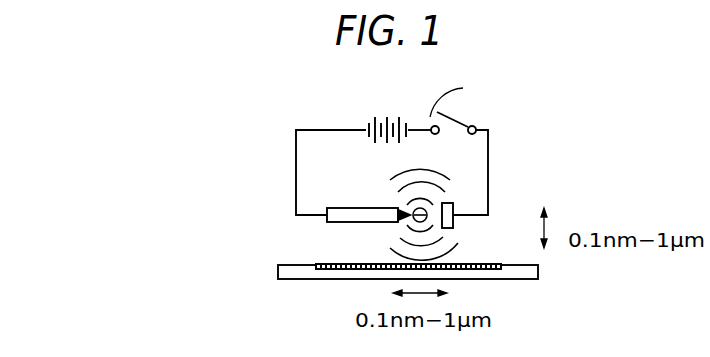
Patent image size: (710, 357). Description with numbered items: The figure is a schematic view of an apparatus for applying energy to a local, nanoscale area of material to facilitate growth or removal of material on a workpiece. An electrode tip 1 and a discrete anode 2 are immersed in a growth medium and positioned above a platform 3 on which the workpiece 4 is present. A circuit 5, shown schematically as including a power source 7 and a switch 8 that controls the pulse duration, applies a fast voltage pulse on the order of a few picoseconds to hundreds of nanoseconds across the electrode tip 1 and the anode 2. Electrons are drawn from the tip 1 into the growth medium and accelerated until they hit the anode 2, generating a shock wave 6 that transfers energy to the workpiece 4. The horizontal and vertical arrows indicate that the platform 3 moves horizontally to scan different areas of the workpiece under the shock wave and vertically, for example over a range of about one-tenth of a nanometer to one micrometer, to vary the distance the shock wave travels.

The electrode tip 1 is at (408, 212).
The discrete anode 2 is at (458, 204).
The platform 3 is at (539, 271).
The workpiece 4 is at (332, 262).
The circuit 5 is at (369, 118).
The shock wave 6 is at (459, 243).
The power source 7 is at (393, 117).
The switch 8 is at (460, 115).